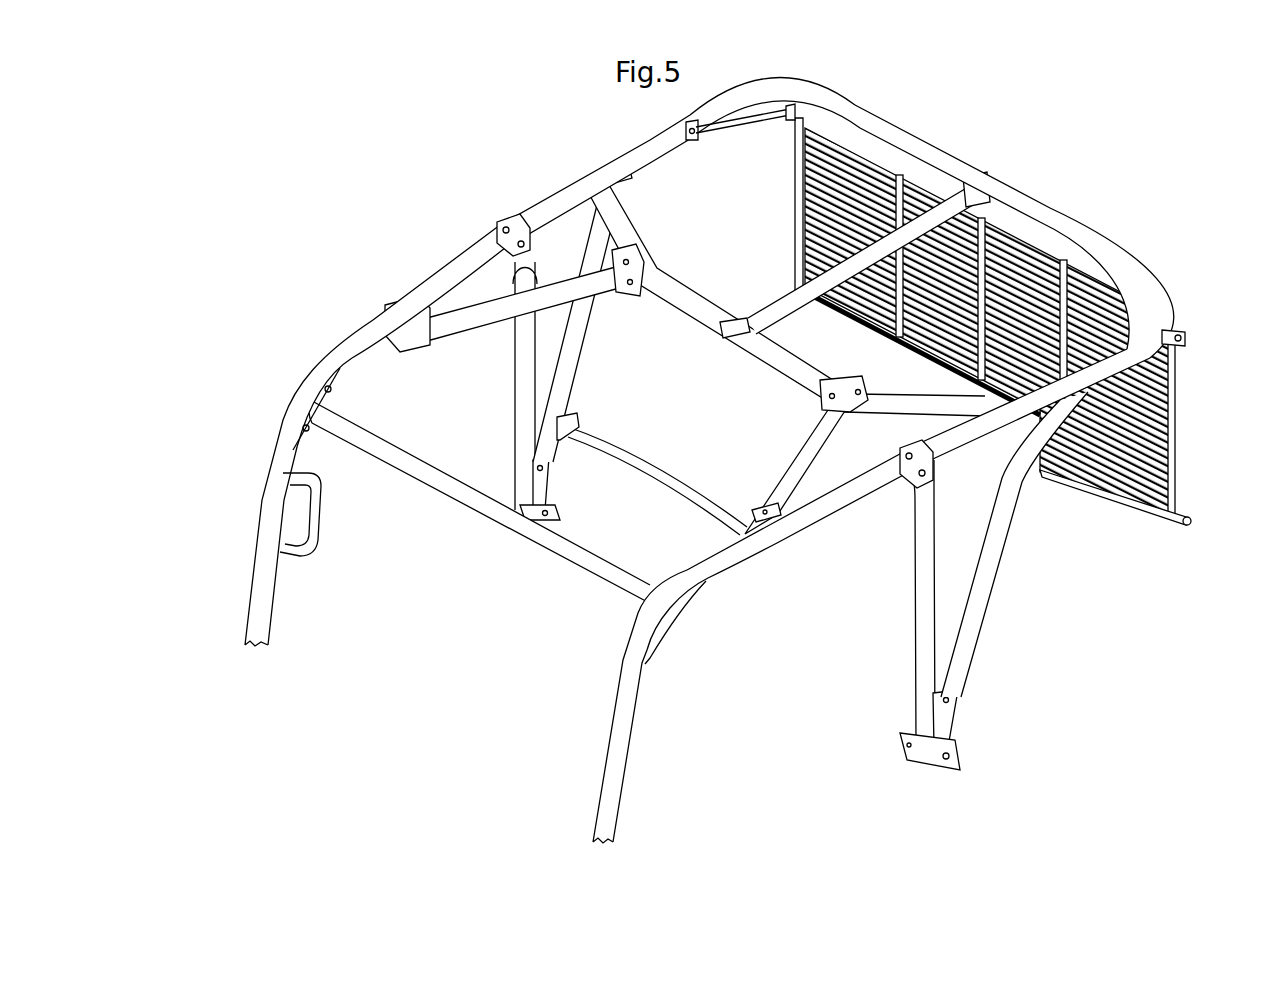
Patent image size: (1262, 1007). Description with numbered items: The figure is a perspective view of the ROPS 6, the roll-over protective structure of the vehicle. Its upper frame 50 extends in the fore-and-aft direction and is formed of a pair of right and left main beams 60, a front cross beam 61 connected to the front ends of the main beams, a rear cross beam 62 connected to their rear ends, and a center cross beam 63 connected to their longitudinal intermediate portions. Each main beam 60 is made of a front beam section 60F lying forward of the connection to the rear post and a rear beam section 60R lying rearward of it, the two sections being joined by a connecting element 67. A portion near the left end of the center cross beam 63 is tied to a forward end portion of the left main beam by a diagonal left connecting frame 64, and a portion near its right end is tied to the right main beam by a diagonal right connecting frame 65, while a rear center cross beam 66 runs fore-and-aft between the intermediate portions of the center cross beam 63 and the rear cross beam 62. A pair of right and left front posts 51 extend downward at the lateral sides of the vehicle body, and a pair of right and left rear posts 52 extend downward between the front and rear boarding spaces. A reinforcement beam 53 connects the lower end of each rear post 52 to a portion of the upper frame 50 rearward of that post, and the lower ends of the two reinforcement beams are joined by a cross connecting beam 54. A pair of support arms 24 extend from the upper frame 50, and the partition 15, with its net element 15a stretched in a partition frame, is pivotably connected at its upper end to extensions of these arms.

The ROPS 6 is at (372, 193).
The partition 15 is at (1146, 530).
The net element 15a is at (1160, 432).
The support arms 24 is at (745, 128).
The upper frame 50 is at (674, 460).
The front posts 51 is at (250, 585).
The rear posts 52 is at (513, 421).
The reinforcement beam 53 is at (584, 334).
The cross connecting beam 54 is at (655, 470).
The main beams 60 is at (734, 358).
The front beam section 60F is at (432, 279).
The rear beam section 60R is at (641, 142).
The front cross beam 61 is at (455, 504).
The rear cross beam 62 is at (1008, 203).
The center cross beam 63 is at (737, 352).
The left connecting frame 64 is at (797, 463).
The right connecting frame 65 is at (478, 326).
The rear center cross beam 66 is at (766, 320).
The connecting element 67 is at (508, 218).